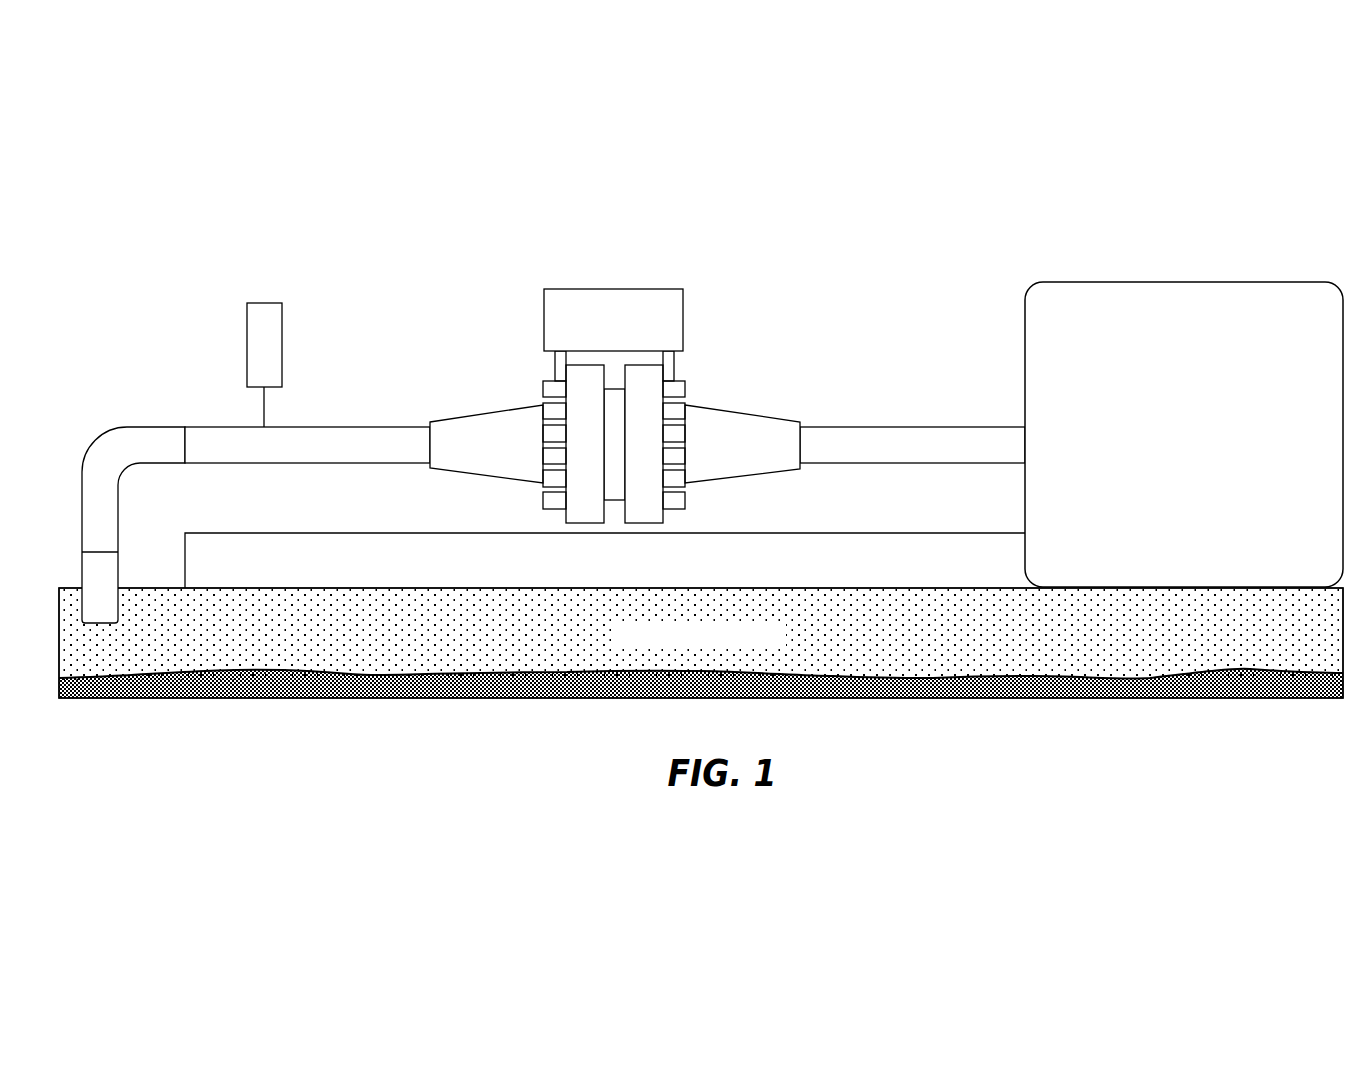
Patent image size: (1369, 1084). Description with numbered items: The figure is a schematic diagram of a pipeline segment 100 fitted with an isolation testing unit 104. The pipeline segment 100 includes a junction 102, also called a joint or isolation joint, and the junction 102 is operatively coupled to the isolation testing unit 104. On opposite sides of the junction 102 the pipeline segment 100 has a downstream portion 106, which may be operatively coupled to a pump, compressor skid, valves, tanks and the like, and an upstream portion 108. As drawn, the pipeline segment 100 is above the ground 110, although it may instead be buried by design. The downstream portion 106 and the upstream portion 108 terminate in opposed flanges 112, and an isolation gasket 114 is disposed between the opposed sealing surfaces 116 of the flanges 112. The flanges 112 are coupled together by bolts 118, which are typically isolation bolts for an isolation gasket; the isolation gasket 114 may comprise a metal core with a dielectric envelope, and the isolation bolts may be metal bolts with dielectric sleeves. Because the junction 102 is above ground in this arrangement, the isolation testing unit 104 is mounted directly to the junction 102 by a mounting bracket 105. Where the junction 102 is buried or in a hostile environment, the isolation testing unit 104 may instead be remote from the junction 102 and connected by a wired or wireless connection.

The pipeline segment 100 is at (701, 454).
The junction 102 is at (542, 498).
The isolation testing unit 104 is at (613, 320).
The mounting bracket 105 is at (679, 359).
The downstream portion 106 is at (912, 445).
The upstream portion 108 is at (307, 445).
The ground 110 is at (605, 560).
The opposed flanges 112 is at (586, 363).
The isolation gasket 114 is at (623, 446).
The opposed sealing surfaces 116 is at (583, 427).
The bolts 118 is at (689, 383).